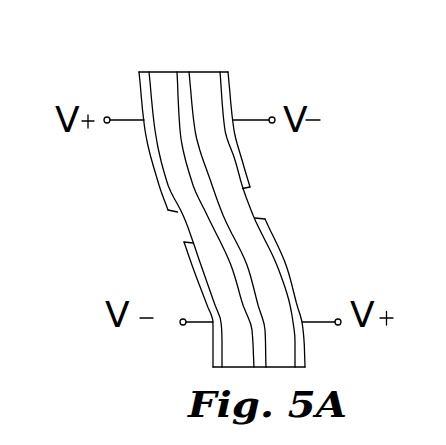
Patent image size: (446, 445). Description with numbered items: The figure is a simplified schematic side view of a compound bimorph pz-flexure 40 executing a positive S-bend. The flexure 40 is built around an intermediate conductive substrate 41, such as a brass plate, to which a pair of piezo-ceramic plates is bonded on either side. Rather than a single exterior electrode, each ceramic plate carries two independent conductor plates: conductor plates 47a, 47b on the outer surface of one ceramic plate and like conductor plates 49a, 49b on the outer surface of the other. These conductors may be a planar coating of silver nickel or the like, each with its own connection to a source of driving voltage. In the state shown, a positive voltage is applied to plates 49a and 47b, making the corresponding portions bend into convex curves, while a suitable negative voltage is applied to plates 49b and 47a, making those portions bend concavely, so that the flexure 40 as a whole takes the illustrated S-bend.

The compound bimorph pz-flexure 40 is at (248, 197).
The intermediate conductive substrate 41 is at (182, 72).
The exterior electrode conductor plate 47a is at (246, 173).
The exterior electrode conductor plate 47b is at (291, 280).
The exterior electrode conductor plate 49a is at (158, 182).
The exterior electrode conductor plate 49b is at (194, 272).